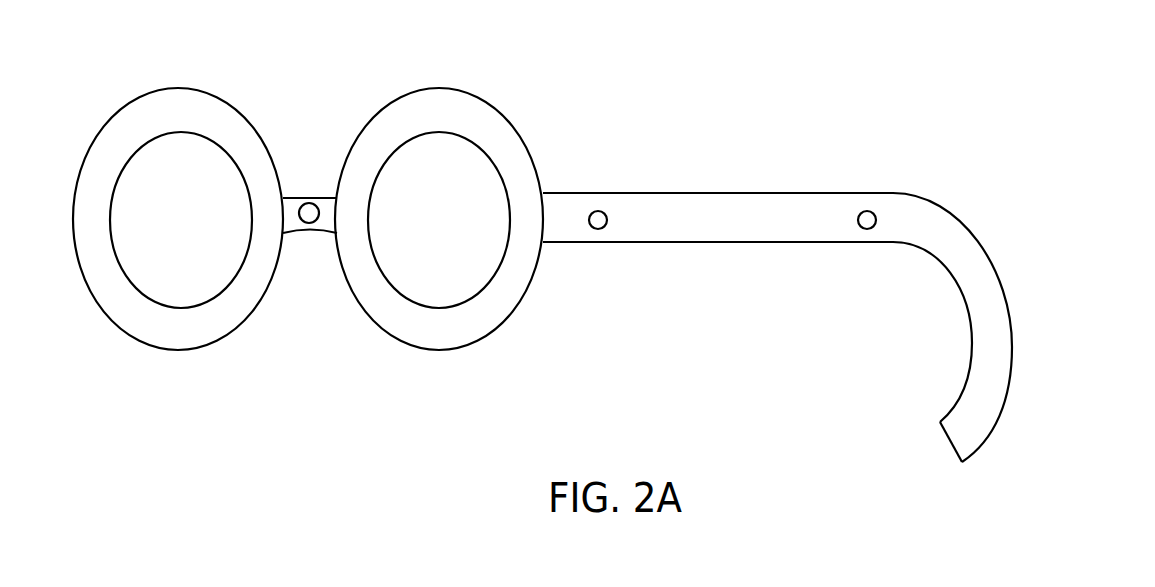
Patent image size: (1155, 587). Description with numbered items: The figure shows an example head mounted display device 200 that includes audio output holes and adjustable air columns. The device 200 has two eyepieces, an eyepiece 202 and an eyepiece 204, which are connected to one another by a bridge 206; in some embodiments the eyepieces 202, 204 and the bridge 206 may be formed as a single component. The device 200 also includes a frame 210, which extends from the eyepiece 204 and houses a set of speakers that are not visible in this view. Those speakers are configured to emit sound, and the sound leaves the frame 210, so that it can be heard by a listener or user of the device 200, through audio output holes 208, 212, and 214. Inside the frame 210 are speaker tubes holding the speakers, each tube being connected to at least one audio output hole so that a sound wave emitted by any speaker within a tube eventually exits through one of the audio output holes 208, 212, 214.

The head mounted display device 200 is at (1052, 131).
The eyepiece 202 is at (182, 88).
The eyepiece 204 is at (442, 87).
The bridge 206 is at (297, 199).
The audio output hole 208 is at (307, 223).
The frame 210 is at (773, 213).
The audio output hole 212 is at (602, 223).
The audio output hole 214 is at (862, 227).